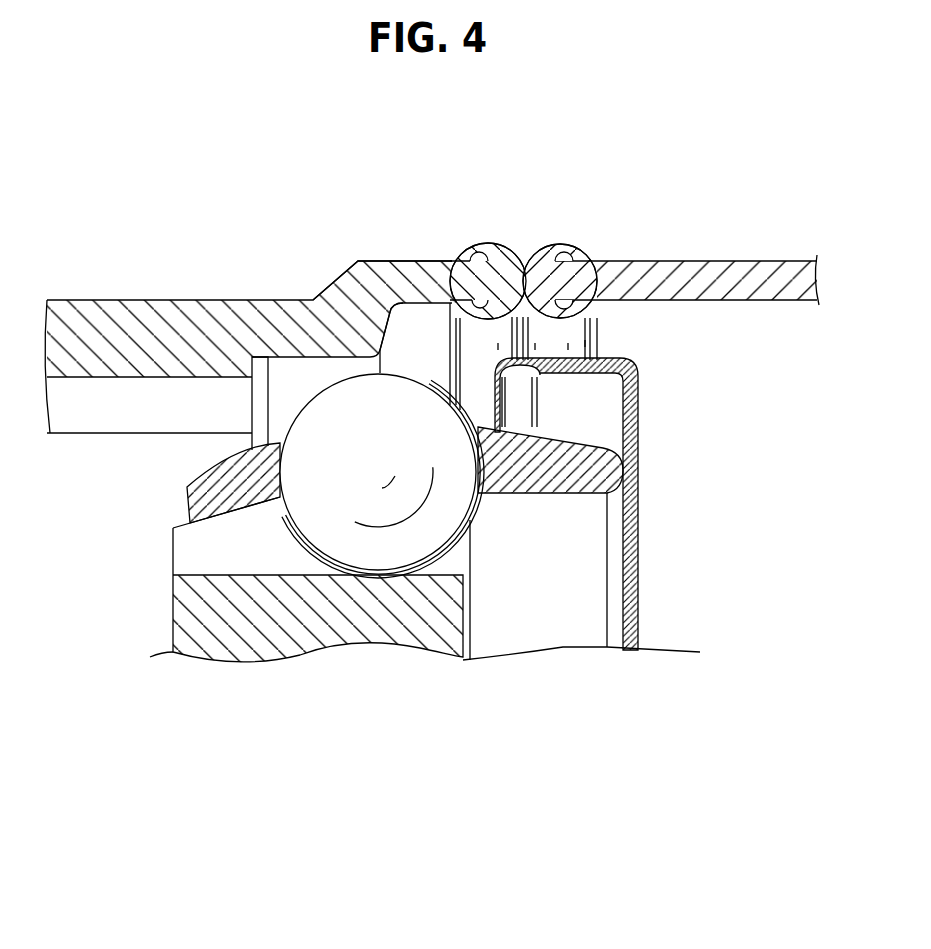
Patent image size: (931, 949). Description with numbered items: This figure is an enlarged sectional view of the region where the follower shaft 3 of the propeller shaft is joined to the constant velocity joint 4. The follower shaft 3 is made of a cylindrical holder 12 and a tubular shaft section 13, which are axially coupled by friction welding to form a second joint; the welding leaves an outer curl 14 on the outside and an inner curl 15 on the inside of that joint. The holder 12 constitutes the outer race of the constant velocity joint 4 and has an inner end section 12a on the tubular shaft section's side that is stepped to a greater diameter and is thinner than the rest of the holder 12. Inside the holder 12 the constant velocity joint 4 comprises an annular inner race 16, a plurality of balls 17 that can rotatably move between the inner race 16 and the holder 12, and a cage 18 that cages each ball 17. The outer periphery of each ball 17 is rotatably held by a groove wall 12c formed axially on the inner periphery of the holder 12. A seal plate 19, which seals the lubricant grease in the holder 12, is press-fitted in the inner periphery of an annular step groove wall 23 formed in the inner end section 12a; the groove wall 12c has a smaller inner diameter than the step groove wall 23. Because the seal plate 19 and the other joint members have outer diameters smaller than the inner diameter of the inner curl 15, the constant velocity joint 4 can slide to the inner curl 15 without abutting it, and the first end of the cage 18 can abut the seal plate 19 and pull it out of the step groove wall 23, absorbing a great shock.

The follower shaft 3 is at (690, 250).
The constant velocity joint 4 is at (411, 344).
The holder 12 is at (172, 317).
The inner end section 12a is at (380, 260).
The groove wall 12c is at (81, 377).
The tubular shaft section 13 is at (774, 262).
The outer curl 14 is at (547, 233).
The inner curl 15 is at (487, 332).
The inner race 16 is at (303, 633).
The ball 17 is at (388, 537).
The cage 18 is at (590, 472).
The seal plate 19 is at (642, 550).
The step groove wall 23 is at (292, 357).